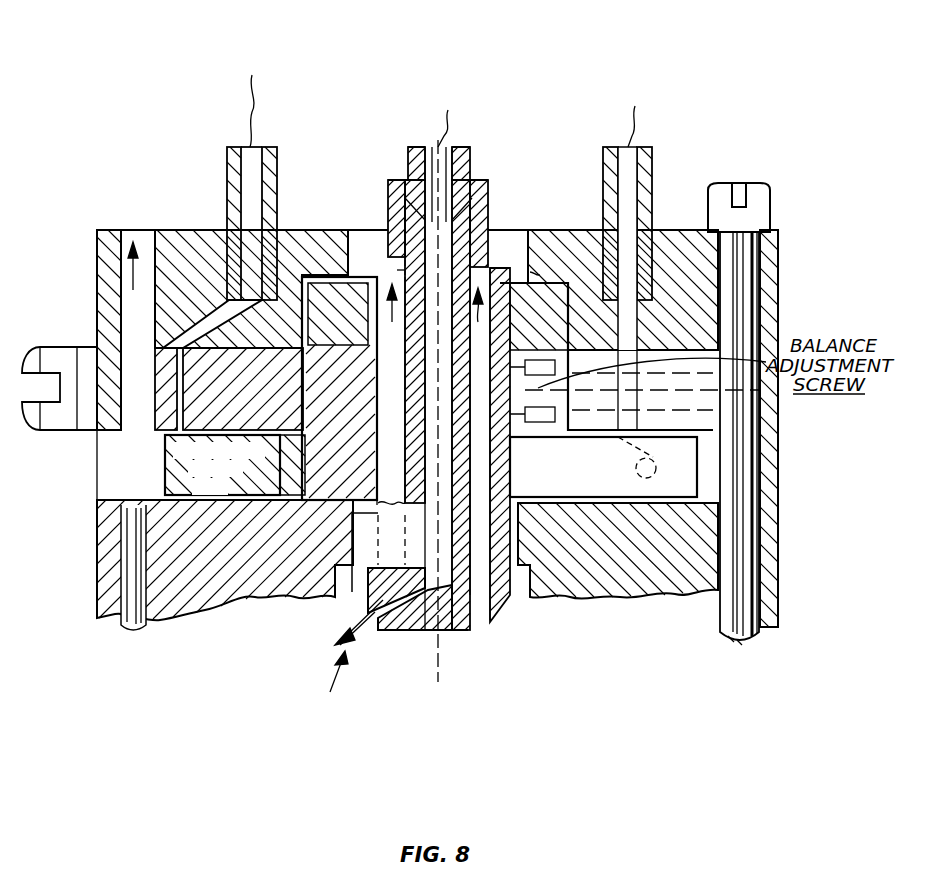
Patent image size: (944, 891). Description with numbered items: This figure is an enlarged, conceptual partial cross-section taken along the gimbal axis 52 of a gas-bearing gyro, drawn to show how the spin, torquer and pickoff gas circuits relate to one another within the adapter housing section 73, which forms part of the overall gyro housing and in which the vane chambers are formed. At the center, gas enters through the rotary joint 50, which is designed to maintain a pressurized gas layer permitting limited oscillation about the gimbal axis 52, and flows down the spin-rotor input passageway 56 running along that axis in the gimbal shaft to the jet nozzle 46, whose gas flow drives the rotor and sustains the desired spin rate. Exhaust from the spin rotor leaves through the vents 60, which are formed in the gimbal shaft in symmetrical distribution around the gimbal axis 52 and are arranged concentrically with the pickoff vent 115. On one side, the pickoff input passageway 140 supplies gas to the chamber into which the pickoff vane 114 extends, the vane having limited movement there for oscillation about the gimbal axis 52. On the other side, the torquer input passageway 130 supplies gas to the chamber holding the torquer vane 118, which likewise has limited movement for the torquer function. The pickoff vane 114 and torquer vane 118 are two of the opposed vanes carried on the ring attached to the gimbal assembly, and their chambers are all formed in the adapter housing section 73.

The adapter housing section 73 is at (672, 254).
The pickoff vent 115 is at (148, 302).
The pickoff input passageway 140 is at (254, 148).
The pickoff vane 114 is at (225, 494).
The vents 60 is at (403, 350).
The rotary joint 50 is at (478, 152).
The passageway 56 is at (452, 332).
The gimbal axis 52 is at (440, 666).
The spin nozzle 46 is at (366, 632).
The torquer vane 118 is at (610, 480).
The torquer input passageway 130 is at (640, 148).